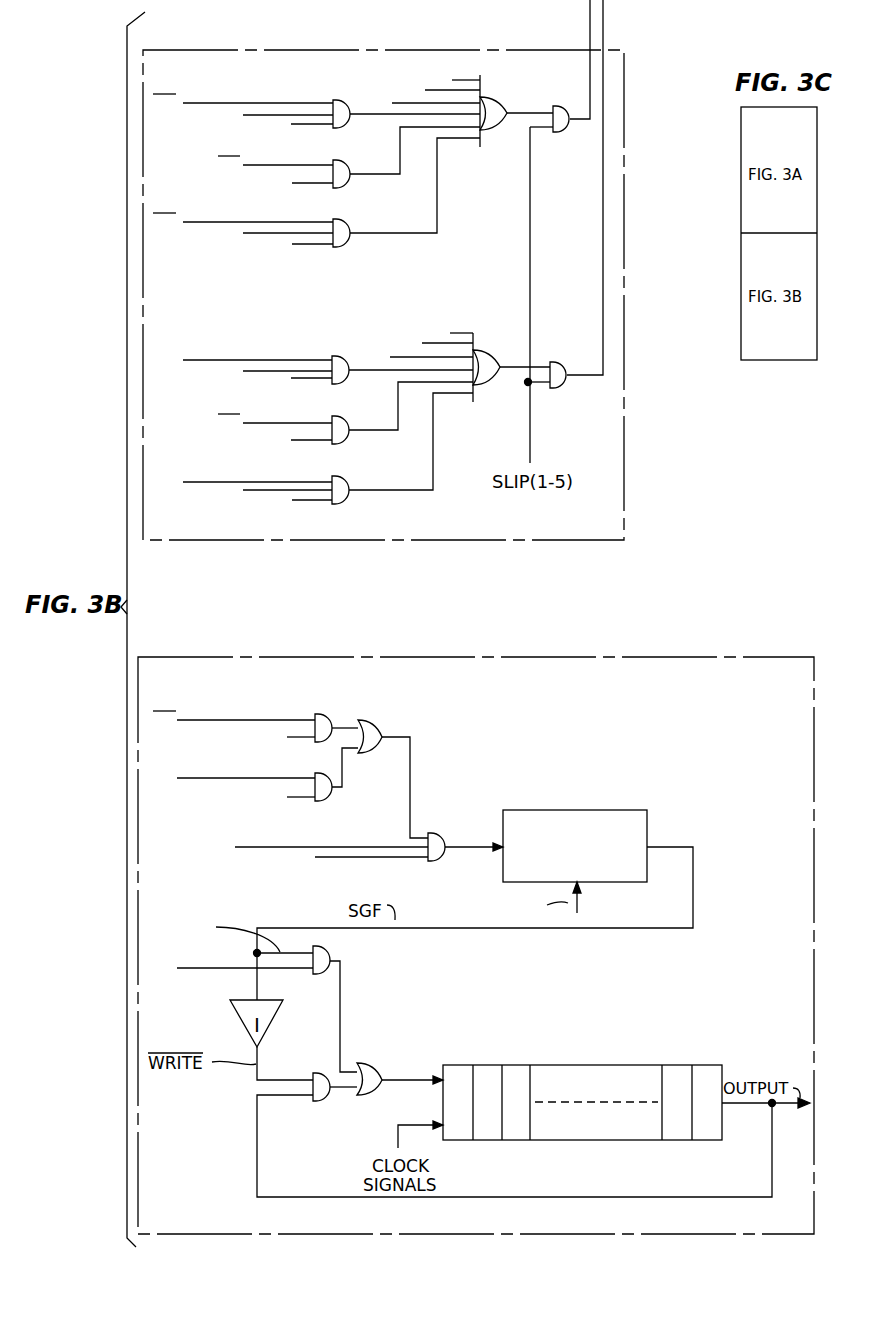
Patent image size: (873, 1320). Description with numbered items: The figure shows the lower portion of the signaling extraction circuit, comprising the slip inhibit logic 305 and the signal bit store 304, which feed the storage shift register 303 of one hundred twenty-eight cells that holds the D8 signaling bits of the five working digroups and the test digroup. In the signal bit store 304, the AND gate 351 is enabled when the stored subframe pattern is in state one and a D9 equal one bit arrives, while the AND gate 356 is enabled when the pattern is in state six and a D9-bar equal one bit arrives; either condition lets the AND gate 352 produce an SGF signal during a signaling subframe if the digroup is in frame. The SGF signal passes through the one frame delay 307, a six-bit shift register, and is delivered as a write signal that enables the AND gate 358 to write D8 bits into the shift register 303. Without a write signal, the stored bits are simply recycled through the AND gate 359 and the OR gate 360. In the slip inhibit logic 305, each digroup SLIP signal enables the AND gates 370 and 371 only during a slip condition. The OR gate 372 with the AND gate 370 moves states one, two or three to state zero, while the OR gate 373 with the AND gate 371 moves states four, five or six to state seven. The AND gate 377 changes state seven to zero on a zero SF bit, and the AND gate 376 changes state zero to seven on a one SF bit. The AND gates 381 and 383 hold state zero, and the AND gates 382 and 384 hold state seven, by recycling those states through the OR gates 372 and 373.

The slip inhibit logic 305 is at (534, 50).
The AND gate 377 is at (340, 100).
The AND gate 381 is at (340, 162).
The AND gate 383 is at (341, 220).
The OR gate 372 is at (495, 97).
The AND gate 370 is at (560, 132).
The AND gate 384 is at (340, 356).
The AND gate 382 is at (339, 418).
The AND gate 376 is at (341, 478).
The OR gate 373 is at (490, 352).
The AND gate 371 is at (558, 388).
The signal bit store 304 is at (680, 657).
The AND gate 356 is at (322, 714).
The AND gate 351 is at (328, 801).
The AND gate 352 is at (440, 833).
The one frame delay 307 is at (648, 830).
The AND gate 358 is at (327, 948).
The AND gate 359 is at (322, 1101).
The OR gate 360 is at (370, 1064).
The 128 cell shift register 303 is at (602, 1140).